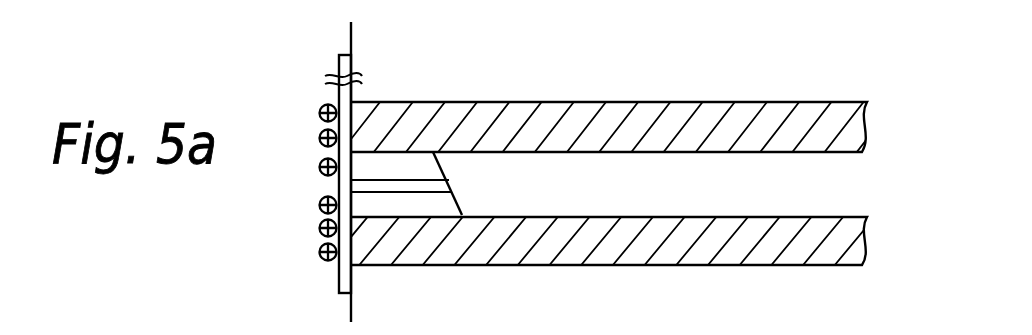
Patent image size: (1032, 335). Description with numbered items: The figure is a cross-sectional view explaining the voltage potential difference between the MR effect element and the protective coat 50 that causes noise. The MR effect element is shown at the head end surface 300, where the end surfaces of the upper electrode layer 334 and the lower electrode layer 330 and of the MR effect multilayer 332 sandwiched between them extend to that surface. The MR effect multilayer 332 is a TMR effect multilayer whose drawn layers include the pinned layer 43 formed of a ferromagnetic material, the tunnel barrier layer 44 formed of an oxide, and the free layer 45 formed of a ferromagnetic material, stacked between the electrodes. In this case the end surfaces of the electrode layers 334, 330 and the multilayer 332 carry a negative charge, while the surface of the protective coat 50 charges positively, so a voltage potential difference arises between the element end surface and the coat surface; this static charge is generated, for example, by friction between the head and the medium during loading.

The head end surface 300 is at (351, 40).
The protective coat 50 is at (338, 92).
The upper electrode layer 334 is at (800, 122).
The lower electrode layer 330 is at (790, 242).
The MR effect multilayer 332 is at (514, 107).
The free layer 45 is at (415, 163).
The tunnel barrier layer 44 is at (432, 185).
The pinned layer 43 is at (445, 205).